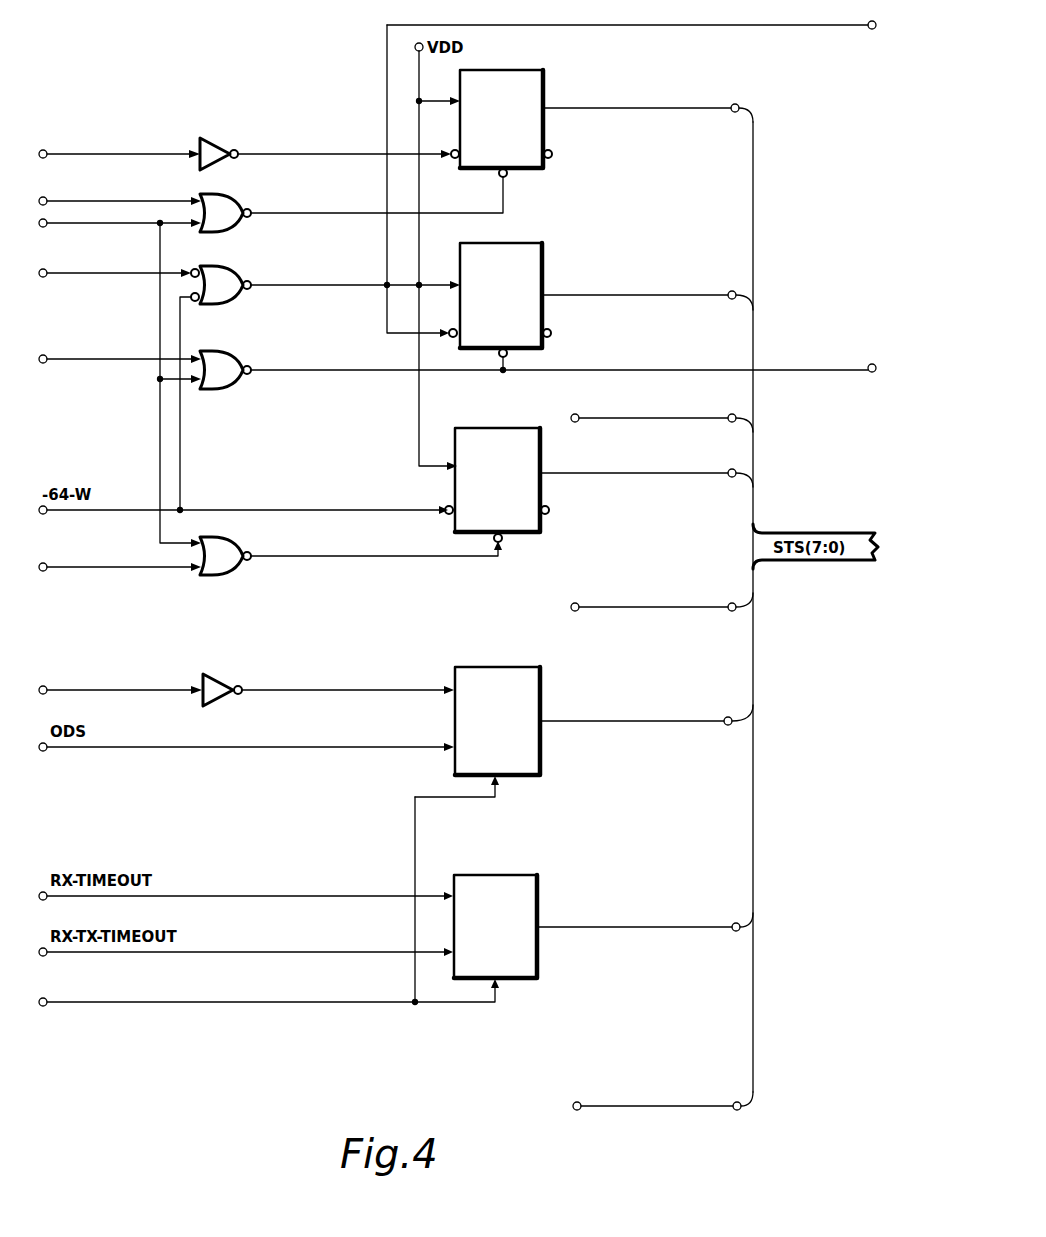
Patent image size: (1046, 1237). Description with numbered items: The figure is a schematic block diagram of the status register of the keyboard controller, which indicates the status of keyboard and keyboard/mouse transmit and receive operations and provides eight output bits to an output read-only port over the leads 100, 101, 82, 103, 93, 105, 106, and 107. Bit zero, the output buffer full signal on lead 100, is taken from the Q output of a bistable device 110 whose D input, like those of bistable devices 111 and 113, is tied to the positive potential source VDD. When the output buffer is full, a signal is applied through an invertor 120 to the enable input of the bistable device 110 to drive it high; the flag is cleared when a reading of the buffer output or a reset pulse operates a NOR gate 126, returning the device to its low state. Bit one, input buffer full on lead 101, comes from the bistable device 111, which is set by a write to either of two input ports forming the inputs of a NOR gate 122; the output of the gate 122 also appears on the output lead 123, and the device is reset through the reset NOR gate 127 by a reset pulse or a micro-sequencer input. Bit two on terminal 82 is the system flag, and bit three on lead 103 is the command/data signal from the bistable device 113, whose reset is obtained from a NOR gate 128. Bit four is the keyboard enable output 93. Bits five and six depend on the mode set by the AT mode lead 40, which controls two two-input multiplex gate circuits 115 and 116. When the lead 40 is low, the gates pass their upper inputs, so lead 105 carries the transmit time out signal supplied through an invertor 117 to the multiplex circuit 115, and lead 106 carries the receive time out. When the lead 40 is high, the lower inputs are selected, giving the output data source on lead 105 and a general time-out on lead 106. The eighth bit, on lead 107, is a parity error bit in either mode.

The bistable device 110 is at (510, 52).
The bistable device 111 is at (512, 226).
The bistable device 113 is at (510, 411).
The two-input multiplex gate circuit 115 is at (511, 653).
The two-input multiplex gate circuit 116 is at (510, 861).
The invertor 117 is at (232, 686).
The invertor 120 is at (229, 150).
The NOR gate 122 is at (237, 280).
The NOR gate 126 is at (237, 208).
The reset NOR gate 127 is at (237, 365).
The NOR gate 128 is at (237, 551).
The output lead 100 is at (648, 112).
The output lead 101 is at (650, 297).
The terminal 82 is at (648, 421).
The lead 103 is at (655, 476).
The output 93 is at (646, 610).
The lead 105 is at (652, 724).
The lead 106 is at (629, 930).
The lead 107 is at (652, 1109).
The output lead 123 is at (762, 27).
The AT mode lead 40 is at (128, 1005).